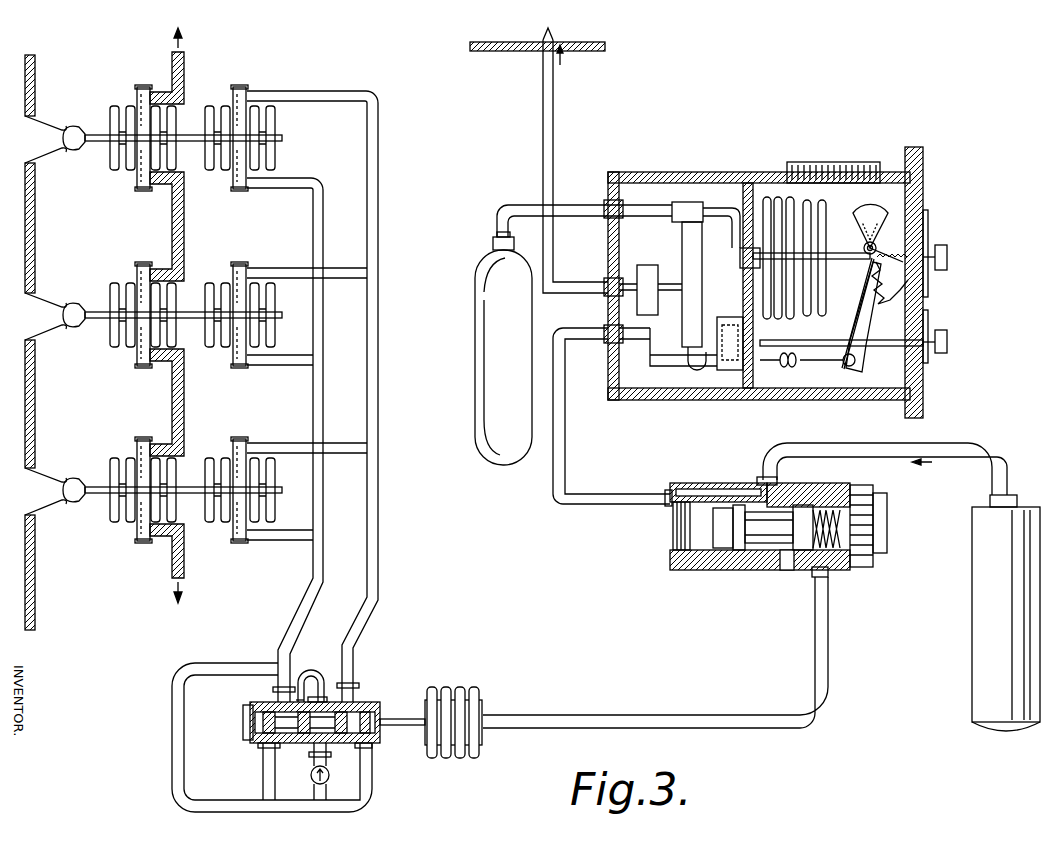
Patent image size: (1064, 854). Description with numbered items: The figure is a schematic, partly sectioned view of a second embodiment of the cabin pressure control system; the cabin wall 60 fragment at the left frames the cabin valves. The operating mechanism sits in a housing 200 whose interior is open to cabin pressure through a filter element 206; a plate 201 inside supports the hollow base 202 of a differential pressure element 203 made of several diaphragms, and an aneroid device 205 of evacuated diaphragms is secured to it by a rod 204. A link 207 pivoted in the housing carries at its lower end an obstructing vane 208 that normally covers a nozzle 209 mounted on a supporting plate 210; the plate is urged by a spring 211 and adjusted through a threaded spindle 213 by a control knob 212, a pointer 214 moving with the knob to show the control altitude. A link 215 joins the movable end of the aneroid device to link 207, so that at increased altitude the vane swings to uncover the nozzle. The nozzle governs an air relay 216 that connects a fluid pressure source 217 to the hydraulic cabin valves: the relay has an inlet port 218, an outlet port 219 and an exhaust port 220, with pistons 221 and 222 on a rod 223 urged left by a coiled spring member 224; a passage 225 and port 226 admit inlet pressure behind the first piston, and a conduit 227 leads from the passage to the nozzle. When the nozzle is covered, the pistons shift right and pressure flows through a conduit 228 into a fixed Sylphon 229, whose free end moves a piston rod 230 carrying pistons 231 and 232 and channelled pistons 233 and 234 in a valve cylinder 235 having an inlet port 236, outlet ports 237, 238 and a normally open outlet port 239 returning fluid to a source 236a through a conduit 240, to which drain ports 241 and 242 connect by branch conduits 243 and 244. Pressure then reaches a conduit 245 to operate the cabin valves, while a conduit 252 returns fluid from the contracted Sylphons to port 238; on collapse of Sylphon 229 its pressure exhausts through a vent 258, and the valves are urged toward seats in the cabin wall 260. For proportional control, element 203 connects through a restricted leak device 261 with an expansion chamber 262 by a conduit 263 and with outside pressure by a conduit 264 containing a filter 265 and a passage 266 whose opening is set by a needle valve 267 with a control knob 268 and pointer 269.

The housing wall 60 is at (25, 400).
The housing 200 is at (735, 172).
The plate 201 is at (760, 400).
The hollow base 202 is at (746, 265).
The differential pressure element 203 is at (792, 212).
The rod 204 is at (805, 320).
The aneroid device 205 is at (842, 219).
The filter element 206 is at (848, 164).
The link 207 is at (872, 282).
The obstructing vane 208 is at (866, 345).
The nozzle 209 is at (858, 360).
The supporting plate 210 is at (830, 342).
The spring 211 is at (870, 297).
The control knob 212 is at (948, 257).
The threaded spindle 213 is at (880, 250).
The pointer 214 is at (928, 233).
The link 215 is at (850, 250).
The air relay 216 is at (736, 481).
The fluid pressure source 217 is at (972, 640).
The inlet port 218 is at (793, 490).
The outlet port 219 is at (830, 570).
The exhaust port 220 is at (752, 571).
The piston 221 is at (718, 525).
The piston 222 is at (800, 571).
The rod 223 is at (782, 530).
The coiled spring member 224 is at (835, 505).
The passage 225 is at (692, 485).
The port 226 is at (673, 510).
The conduit 227 is at (556, 425).
The conduit 228 is at (730, 715).
The Sylphon 229 is at (481, 699).
The piston rod 230 is at (395, 718).
The piston 231 is at (312, 746).
The piston 232 is at (362, 702).
The channelled piston 233 is at (300, 684).
The channelled piston 234 is at (322, 697).
The valve cylinder 235 is at (250, 705).
The inlet port 236 is at (310, 777).
The source 236a is at (322, 803).
The outlet port 237 is at (277, 685).
The outlet port 238 is at (355, 684).
The outlet port 239 is at (310, 678).
The conduit 240 is at (172, 712).
The drain port 241 is at (258, 744).
The drain port 242 is at (372, 745).
The branch conduit 243 is at (263, 780).
The branch conduit 244 is at (373, 802).
The conduit 245 is at (313, 582).
The conduit 252 is at (378, 352).
The vent 258 is at (887, 510).
The cabin wall 260 is at (486, 53).
The restricted leak device 261 is at (683, 270).
The expansion chamber 262 is at (500, 349).
The conduit 263 is at (582, 206).
The conduit 264 is at (544, 150).
The filter 265 is at (642, 266).
The passage 266 is at (726, 372).
The needle valve 267 is at (780, 320).
The control knob 268 is at (948, 347).
The pointer 269 is at (930, 320).